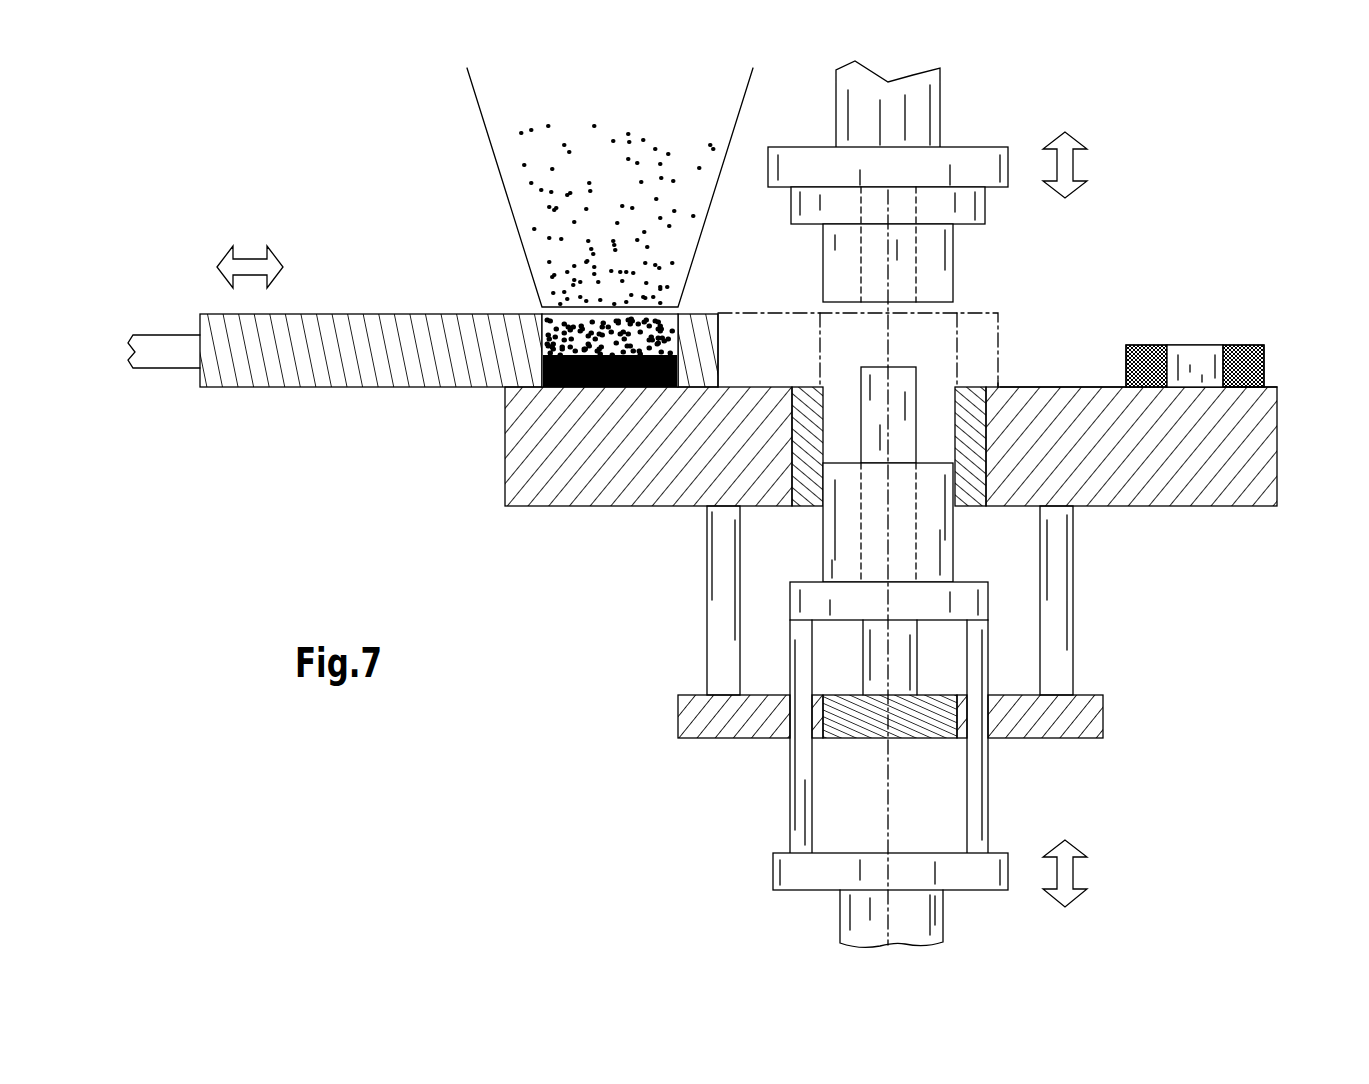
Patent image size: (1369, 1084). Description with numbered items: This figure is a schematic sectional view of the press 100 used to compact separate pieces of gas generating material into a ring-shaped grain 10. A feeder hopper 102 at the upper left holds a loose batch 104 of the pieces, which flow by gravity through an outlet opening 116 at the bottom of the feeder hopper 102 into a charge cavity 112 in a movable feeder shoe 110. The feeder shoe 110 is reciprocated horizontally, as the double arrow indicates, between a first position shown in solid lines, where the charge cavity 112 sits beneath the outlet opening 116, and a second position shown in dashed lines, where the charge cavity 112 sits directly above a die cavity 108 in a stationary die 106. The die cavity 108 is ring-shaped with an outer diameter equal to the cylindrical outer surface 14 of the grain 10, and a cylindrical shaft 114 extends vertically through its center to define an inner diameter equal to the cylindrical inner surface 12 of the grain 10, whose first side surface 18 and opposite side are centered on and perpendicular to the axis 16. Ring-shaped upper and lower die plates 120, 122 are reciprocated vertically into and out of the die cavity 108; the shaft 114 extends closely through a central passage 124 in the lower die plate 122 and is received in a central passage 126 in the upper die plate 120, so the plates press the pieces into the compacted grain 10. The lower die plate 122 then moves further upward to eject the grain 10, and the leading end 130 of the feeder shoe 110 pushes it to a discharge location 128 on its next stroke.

The grain 10 is at (1145, 342).
The cylindrical inner surface 12 is at (1222, 352).
The cylindrical outer surface 14 is at (1262, 368).
The axis 16 is at (1240, 346).
The first side surface 18 is at (1243, 388).
The press 100 is at (1192, 236).
The feeder hopper 102 is at (487, 138).
The loose batch 104 is at (608, 218).
The stationary die 106 is at (1248, 440).
The die cavity 108 is at (940, 423).
The feeder shoe 110 is at (422, 343).
The charge cavity 112 is at (540, 330).
The cylindrical shaft 114 is at (917, 374).
The outlet opening 116 is at (634, 302).
The upper die plate 120 is at (823, 262).
The lower die plate 122 is at (857, 544).
The central passage 124 is at (850, 550).
The central passage 126 is at (919, 260).
The discharge location 128 is at (1228, 278).
The leading end 130 is at (722, 376).